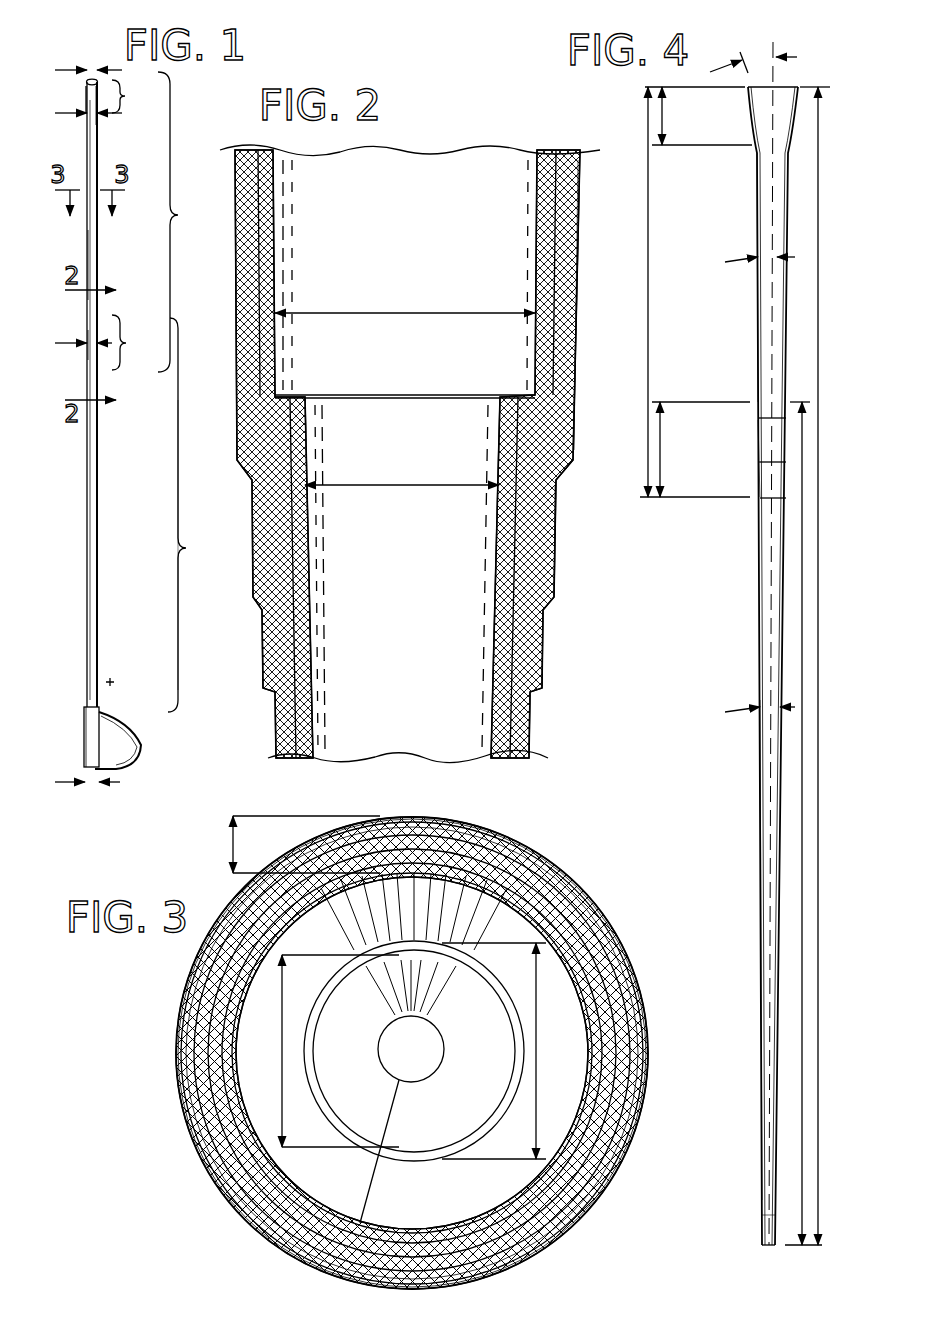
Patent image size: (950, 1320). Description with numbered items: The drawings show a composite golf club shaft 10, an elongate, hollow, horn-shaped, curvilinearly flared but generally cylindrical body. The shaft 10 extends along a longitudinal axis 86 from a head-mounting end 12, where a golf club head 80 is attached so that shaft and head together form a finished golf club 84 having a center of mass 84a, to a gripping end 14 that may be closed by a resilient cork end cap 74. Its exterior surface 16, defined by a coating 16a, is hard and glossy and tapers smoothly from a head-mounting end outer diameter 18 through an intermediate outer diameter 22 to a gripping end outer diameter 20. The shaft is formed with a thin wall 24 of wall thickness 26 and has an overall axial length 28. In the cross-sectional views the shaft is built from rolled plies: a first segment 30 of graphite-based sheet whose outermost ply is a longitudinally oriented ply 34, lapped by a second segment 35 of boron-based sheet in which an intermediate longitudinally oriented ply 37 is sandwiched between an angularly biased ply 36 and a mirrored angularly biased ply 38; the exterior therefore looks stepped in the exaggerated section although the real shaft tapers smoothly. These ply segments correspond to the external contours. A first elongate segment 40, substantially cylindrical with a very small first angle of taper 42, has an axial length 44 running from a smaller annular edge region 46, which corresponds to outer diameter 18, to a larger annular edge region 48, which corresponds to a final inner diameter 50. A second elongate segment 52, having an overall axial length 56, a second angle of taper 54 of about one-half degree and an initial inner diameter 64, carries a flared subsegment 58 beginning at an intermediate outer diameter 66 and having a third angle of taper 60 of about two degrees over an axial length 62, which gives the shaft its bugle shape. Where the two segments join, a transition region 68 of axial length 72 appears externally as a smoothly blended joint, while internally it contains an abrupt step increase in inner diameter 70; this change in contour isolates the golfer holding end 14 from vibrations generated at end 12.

In FIG. 1, the golf club shaft 10 is at (66, 325).
In FIG. 2, the golf club shaft 10 is at (433, 140).
In FIG. 3, the golf club shaft 10 is at (150, 985).
In FIG. 4, the golf club shaft 10 is at (745, 583).
In FIG. 1, the head-mounting end 12 is at (80, 698).
In FIG. 1, the gripping end 14 is at (83, 112).
In FIG. 1, the exterior surface 16 is at (97, 262).
In FIG. 3, the exterior surface 16 is at (636, 1129).
In FIG. 3, the coating 16a is at (556, 1243).
In FIG. 1, the head-mounting end outer diameter 18 is at (91, 790).
In FIG. 1, the gripping end outer diameter 20 is at (91, 70).
In FIG. 1, the intermediate outer diameter 22 is at (87, 345).
In FIG. 3, the thin wall 24 is at (603, 910).
In FIG. 3, the wall thickness 26 is at (233, 852).
In FIG. 4, the overall axial length 28 is at (818, 680).
In FIG. 2, the first segment 30 is at (545, 730).
In FIG. 4, the longitudinally oriented ply 34 is at (760, 848).
In FIG. 2, the second segment 35 is at (566, 583).
In FIG. 2, the angularly biased ply 36 is at (548, 635).
In FIG. 4, the angularly biased ply 36 is at (757, 481).
In FIG. 2, the longitudinally oriented ply 37 is at (558, 528).
In FIG. 4, the longitudinally oriented ply 37 is at (757, 441).
In FIG. 2, the angularly biased ply 38 is at (572, 346).
In FIG. 4, the angularly biased ply 38 is at (758, 162).
In FIG. 1, the first elongate segment 40 is at (194, 545).
In FIG. 4, the first angle of taper 42 is at (761, 715).
In FIG. 4, the axial length 44 is at (803, 841).
In FIG. 4, the smaller annular edge region 46 is at (745, 1215).
In FIG. 4, the larger annular edge region 48 is at (750, 405).
In FIG. 2, the final inner diameter 50 is at (388, 483).
In FIG. 3, the final inner diameter 50 is at (282, 1048).
In FIG. 1, the second elongate segment 52 is at (181, 222).
In FIG. 4, the second angle of taper 54 is at (762, 258).
In FIG. 4, the overall axial length 56 is at (650, 222).
In FIG. 1, the subsegment 58 is at (105, 96).
In FIG. 4, the third angle of taper 60 is at (758, 58).
In FIG. 4, the axial length 62 is at (667, 117).
In FIG. 2, the initial inner diameter 64 is at (388, 310).
In FIG. 3, the initial inner diameter 64 is at (538, 1062).
In FIG. 1, the intermediate outer diameter 66 is at (97, 120).
In FIG. 1, the transition region 68 is at (108, 342).
In FIG. 2, the step increase in inner diameter 70 is at (300, 396).
In FIG. 3, the step increase in inner diameter 70 is at (496, 1110).
In FIG. 4, the axial length 72 is at (662, 440).
In FIG. 1, the end cap 74 is at (86, 82).
In FIG. 1, the golf club head 80 is at (113, 745).
In FIG. 1, the finished golf club 84 is at (183, 405).
In FIG. 1, the center of mass 84a is at (112, 680).
In FIG. 4, the longitudinal axis 86 is at (786, 66).